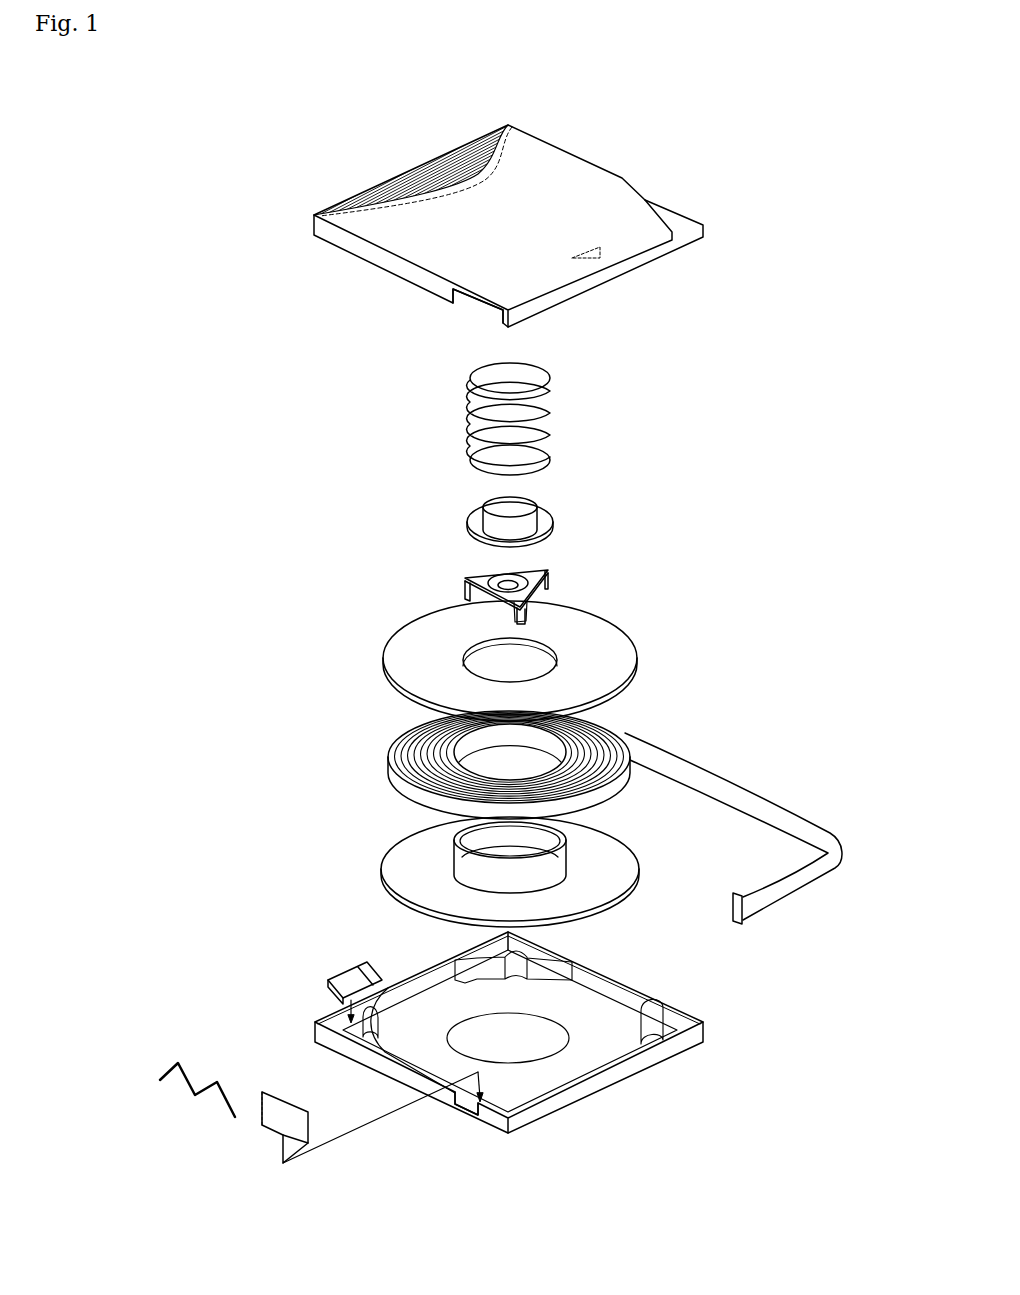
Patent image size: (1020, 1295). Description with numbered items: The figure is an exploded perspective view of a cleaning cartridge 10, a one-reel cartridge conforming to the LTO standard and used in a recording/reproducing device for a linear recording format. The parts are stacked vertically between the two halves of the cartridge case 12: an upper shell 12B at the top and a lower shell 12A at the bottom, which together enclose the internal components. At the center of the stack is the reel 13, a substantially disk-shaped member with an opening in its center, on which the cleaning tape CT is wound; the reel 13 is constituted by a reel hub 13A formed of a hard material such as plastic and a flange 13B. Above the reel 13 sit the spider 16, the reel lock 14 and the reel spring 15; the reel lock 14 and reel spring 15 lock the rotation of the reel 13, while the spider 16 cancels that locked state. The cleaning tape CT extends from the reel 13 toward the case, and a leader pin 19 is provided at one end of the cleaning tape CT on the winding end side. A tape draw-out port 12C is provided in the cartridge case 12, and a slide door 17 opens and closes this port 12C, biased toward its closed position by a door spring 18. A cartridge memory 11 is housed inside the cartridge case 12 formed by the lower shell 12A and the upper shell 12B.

The cleaning cartridge 10 is at (688, 124).
The cartridge memory 11 is at (355, 965).
The cartridge case 12 is at (140, 610).
The lower shell 12A is at (325, 1027).
The upper shell 12B is at (362, 257).
The tape draw-out port 12C is at (460, 296).
The reel 13 is at (297, 668).
The reel hub 13A is at (386, 848).
The flange 13B is at (383, 683).
The reel lock 14 is at (554, 522).
The reel spring 15 is at (555, 408).
The spider 16 is at (550, 568).
The slide door 17 is at (280, 1133).
The door spring 18 is at (192, 1095).
The leader pin 19 is at (735, 928).
The cleaning tape CT is at (762, 800).